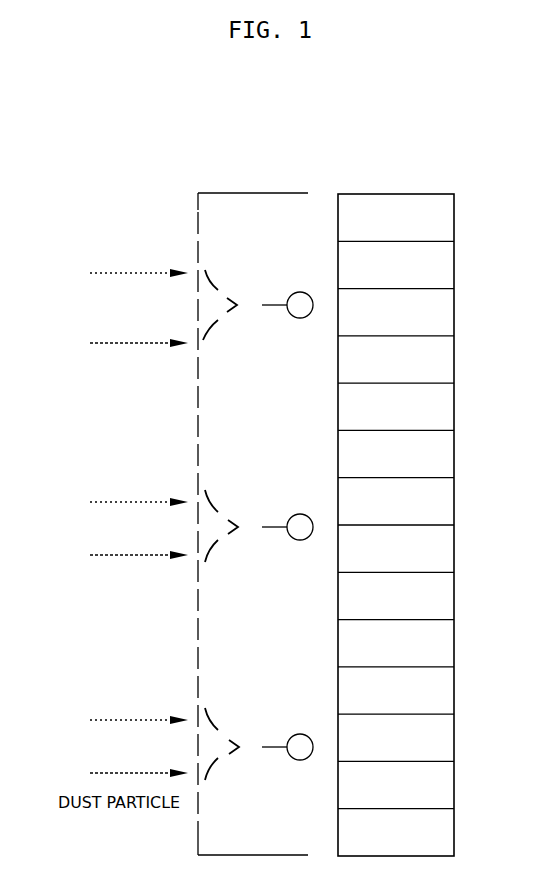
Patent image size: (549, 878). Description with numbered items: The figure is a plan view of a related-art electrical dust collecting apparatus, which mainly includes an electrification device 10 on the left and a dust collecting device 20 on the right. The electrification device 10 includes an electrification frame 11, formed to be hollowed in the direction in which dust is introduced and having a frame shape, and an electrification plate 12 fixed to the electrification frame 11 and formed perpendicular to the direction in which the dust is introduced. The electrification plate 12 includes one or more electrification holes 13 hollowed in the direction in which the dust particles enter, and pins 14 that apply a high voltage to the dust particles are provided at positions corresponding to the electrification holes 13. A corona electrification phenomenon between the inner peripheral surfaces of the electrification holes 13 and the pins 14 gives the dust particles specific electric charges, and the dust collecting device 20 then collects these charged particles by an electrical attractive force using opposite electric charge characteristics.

The electrification device 10 is at (264, 162).
The electrification frame 11 is at (219, 193).
The electrification plate 12 is at (197, 229).
The electrification holes 13 is at (206, 300).
The pins 14 is at (300, 292).
The dust collecting device 20 is at (402, 172).